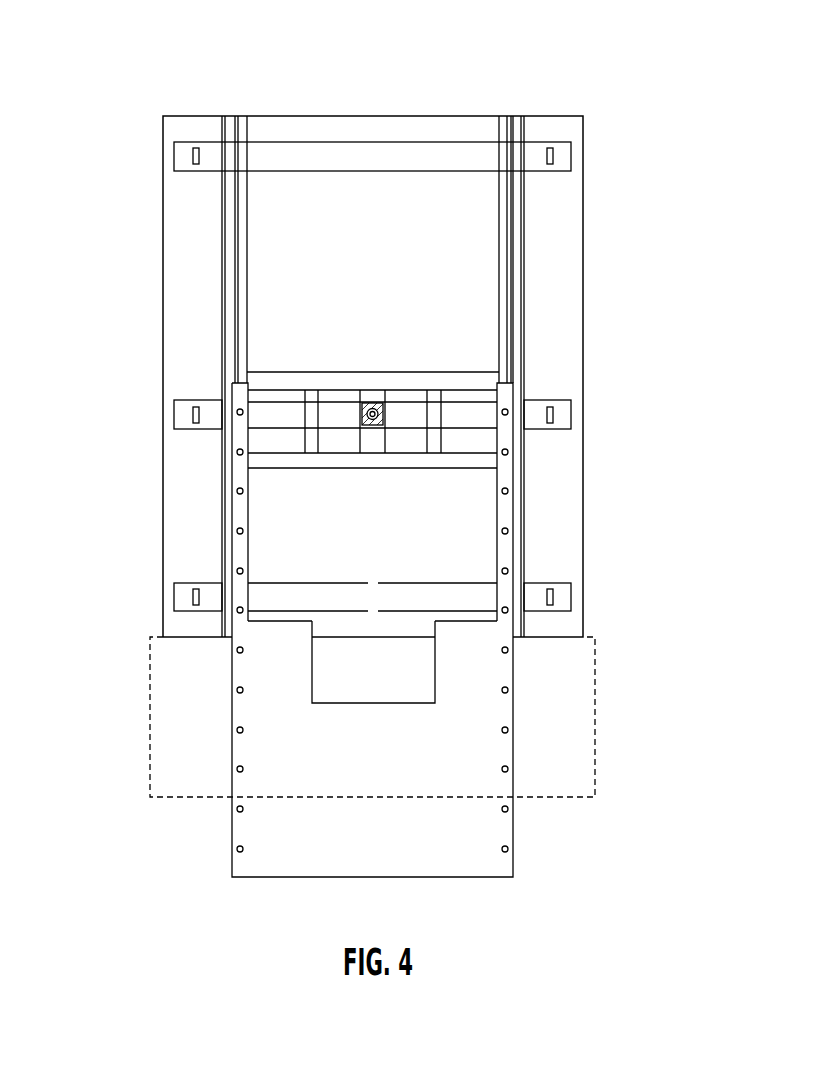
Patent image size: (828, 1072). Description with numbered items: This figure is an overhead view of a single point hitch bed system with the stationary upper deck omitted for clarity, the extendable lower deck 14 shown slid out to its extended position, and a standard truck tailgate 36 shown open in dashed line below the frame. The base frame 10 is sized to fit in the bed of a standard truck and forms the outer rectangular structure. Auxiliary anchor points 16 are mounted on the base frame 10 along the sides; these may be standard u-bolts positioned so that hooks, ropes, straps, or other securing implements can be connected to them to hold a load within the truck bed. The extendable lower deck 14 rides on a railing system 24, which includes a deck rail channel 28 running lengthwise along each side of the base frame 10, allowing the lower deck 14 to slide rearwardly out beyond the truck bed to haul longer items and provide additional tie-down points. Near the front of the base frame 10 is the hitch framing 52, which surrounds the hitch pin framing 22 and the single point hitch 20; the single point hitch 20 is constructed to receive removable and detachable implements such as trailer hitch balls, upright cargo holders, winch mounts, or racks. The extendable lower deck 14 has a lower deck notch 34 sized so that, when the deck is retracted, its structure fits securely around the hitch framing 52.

The base frame 10 is at (161, 496).
The extendable lower deck 14 is at (420, 838).
The auxiliary anchor points 16 is at (550, 147).
The single point hitch 20 is at (386, 413).
The hitch pin framing 22 is at (353, 407).
The railing system 24 is at (514, 244).
The deck rail channel 28 is at (514, 340).
The lower deck notch 34 is at (420, 664).
The enclosure outline 36 is at (157, 788).
The hitch framing 52 is at (368, 371).